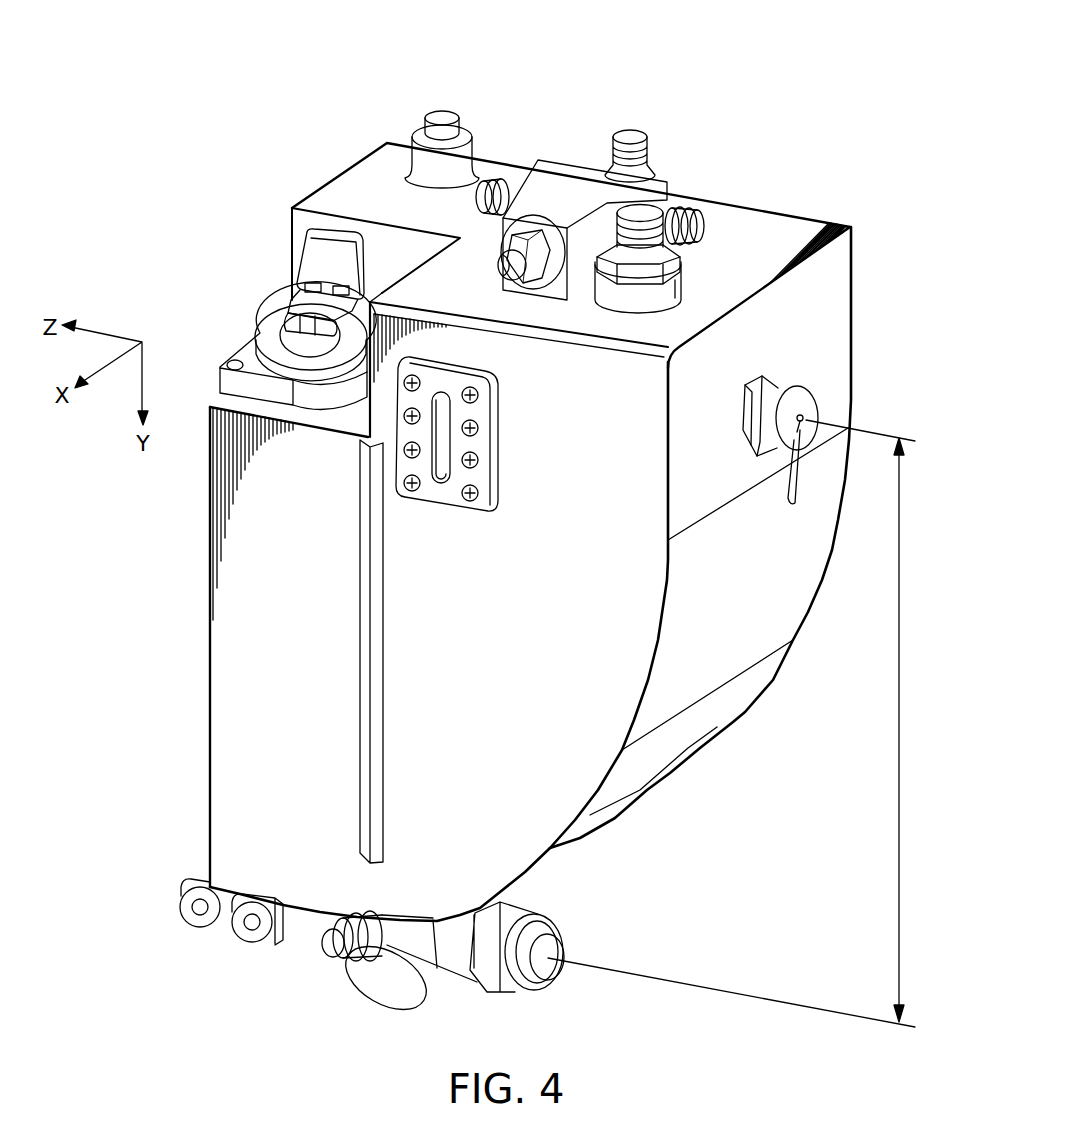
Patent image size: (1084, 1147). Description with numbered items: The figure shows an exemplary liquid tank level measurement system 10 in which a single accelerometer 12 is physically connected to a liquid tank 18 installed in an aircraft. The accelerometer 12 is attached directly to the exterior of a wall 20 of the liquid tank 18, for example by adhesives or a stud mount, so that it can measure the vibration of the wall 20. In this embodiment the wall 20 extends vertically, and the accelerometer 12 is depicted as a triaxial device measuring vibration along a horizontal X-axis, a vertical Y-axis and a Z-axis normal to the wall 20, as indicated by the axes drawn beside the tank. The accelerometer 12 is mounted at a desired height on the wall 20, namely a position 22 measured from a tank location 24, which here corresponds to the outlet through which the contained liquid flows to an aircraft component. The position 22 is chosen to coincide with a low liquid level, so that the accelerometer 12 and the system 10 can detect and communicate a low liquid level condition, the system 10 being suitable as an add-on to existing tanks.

The liquid tank level measurement system 10 is at (783, 58).
The accelerometer 12 is at (807, 405).
The liquid tank 18 is at (752, 217).
The wall 20 is at (837, 290).
The position 22 is at (899, 735).
The tank location 24 is at (492, 993).